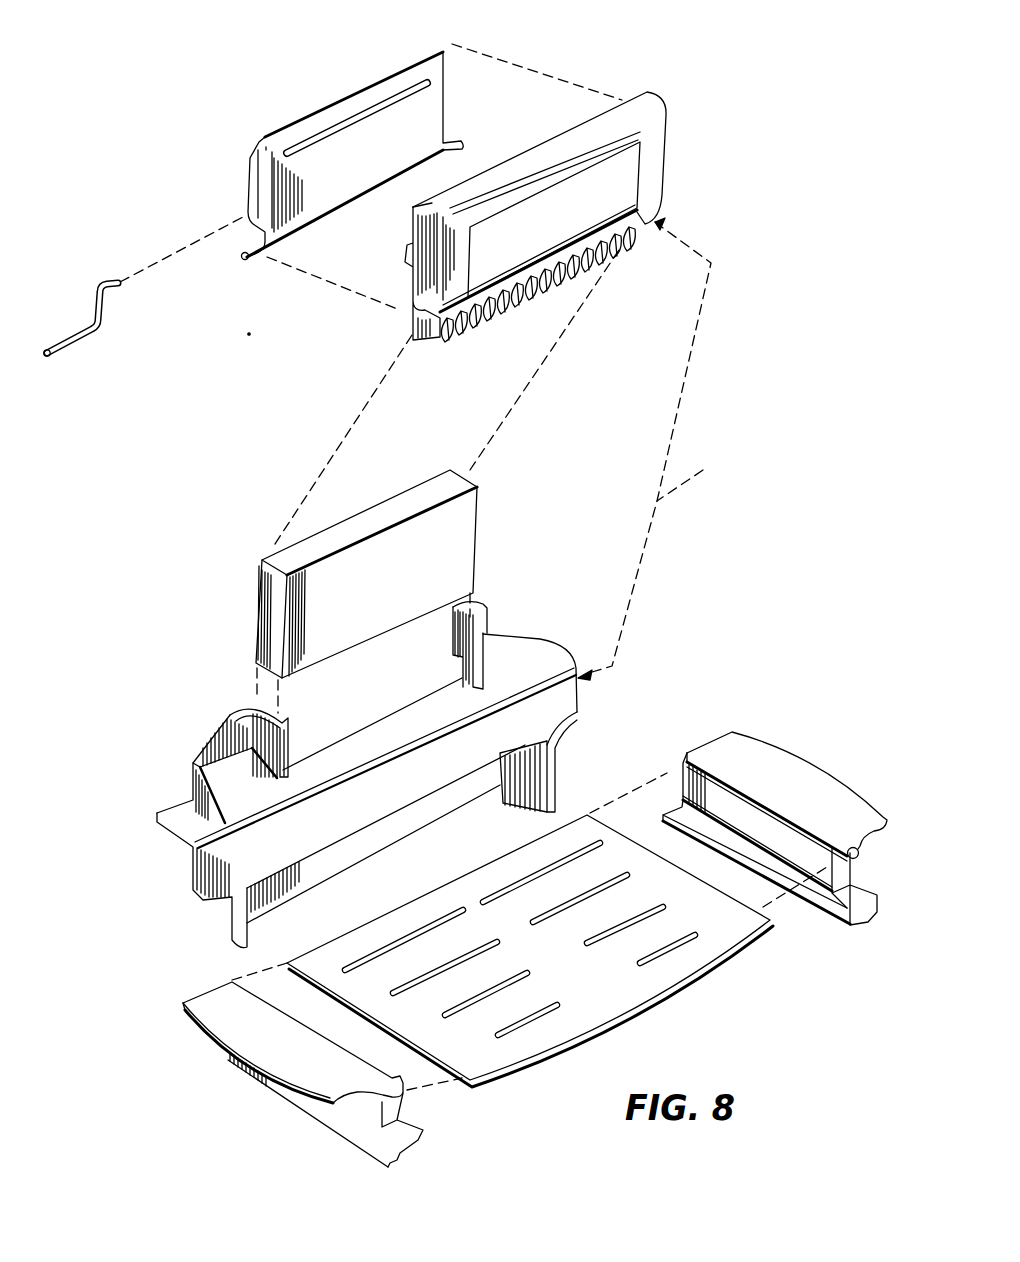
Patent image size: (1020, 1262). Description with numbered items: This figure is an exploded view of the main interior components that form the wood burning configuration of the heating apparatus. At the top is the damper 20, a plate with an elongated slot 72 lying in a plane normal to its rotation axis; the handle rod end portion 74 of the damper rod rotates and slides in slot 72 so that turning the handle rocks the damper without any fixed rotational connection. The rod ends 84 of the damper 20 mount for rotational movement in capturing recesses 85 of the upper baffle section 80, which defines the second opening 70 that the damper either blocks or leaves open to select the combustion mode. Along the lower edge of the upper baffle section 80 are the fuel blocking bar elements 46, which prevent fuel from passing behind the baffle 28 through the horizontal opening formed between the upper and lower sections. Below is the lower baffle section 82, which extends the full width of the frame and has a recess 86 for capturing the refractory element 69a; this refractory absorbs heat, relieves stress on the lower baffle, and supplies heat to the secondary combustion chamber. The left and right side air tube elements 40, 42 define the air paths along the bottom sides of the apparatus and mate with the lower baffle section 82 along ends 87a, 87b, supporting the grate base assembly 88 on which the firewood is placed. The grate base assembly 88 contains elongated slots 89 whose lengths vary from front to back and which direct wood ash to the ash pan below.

The damper 20 is at (331, 164).
The elongated slot 72 is at (263, 192).
The rod ends 84 is at (245, 260).
The handle rod end portion 74 is at (118, 288).
The upper baffle section 80 is at (560, 215).
The second opening 70 is at (623, 167).
The capturing recesses 85 is at (413, 293).
The fuel blocking bar elements 46 is at (613, 257).
The baffle 28 is at (468, 583).
The refractory element 69a is at (468, 540).
The lower baffle section 82 is at (540, 677).
The recess 86 is at (267, 707).
The end 87a is at (222, 990).
The end 87b is at (720, 737).
The side air tube element 42 is at (775, 855).
The side air tube element 40 is at (291, 1066).
The grate base assembly 88 is at (530, 951).
The elongated slots 89 is at (518, 988).